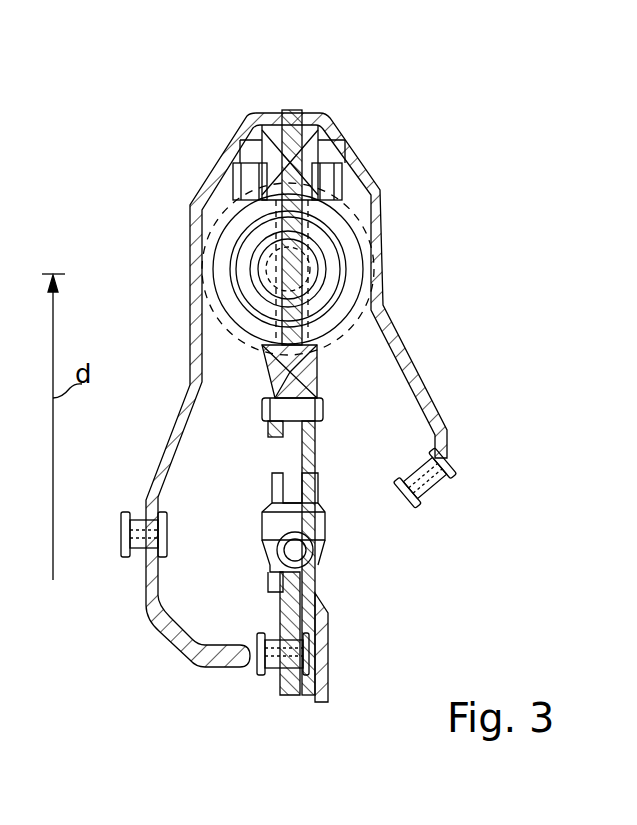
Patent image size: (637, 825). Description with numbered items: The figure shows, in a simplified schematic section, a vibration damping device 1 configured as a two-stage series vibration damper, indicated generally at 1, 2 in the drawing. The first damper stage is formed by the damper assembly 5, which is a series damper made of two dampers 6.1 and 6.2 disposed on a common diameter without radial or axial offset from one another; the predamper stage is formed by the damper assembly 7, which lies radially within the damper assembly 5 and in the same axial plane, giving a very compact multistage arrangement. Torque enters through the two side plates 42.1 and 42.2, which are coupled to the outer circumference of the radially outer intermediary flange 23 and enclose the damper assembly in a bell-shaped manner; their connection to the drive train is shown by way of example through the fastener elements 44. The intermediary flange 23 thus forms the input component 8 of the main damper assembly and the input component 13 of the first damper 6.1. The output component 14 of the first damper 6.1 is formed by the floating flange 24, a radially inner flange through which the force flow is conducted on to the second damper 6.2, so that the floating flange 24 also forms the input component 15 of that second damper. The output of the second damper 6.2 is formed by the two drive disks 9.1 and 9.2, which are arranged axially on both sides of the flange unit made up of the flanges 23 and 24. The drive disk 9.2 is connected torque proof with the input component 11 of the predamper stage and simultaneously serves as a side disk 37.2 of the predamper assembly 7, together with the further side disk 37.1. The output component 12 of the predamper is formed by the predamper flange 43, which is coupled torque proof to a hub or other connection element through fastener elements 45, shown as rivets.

The vibration damping device 1 is at (384, 60).
The brake actuator 2 is at (360, 102).
The damper assembly 5 is at (332, 390).
The first damper 6.1 is at (332, 390).
The second damper 6.2 is at (332, 390).
The damper assembly 7 is at (323, 573).
The input component 8 is at (291, 195).
The input component 13 is at (293, 110).
The drive disk 9.1 is at (332, 390).
The drive disk 9.2 is at (332, 390).
The input component 11 is at (288, 499).
The output component 12 is at (304, 601).
The predamper flange 43 is at (296, 693).
The input component 15 is at (318, 460).
The intermediary flange 23 is at (333, 165).
The floating flange 24 is at (392, 371).
The output component 14 is at (318, 360).
The hex nut 37.1 is at (277, 495).
The side disk 37.2 is at (325, 520).
The side plate 42.1 is at (332, 390).
The side plate 42.2 is at (453, 433).
The fastener element 44 is at (125, 528).
The fastener element 45 is at (278, 675).